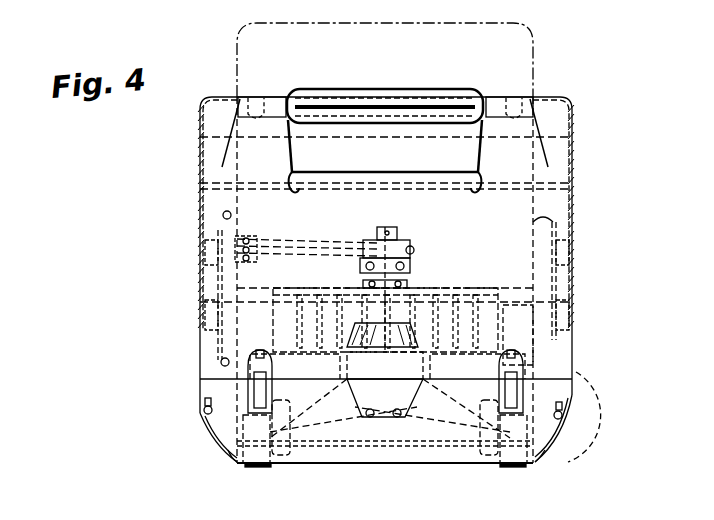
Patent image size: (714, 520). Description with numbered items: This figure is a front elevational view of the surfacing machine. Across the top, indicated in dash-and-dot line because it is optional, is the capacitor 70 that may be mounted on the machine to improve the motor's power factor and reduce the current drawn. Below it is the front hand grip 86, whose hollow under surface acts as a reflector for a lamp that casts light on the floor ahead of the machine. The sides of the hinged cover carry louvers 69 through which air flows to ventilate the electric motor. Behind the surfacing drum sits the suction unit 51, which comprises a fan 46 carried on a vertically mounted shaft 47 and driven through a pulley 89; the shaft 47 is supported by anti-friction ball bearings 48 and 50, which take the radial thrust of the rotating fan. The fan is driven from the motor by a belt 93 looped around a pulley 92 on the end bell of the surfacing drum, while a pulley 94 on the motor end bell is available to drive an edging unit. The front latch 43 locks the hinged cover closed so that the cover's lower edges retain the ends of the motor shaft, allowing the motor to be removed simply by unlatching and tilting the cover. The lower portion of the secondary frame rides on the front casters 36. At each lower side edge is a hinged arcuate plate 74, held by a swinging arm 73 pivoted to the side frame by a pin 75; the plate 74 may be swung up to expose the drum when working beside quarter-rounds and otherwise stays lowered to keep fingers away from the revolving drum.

The capacitor 70 is at (527, 78).
The louvers 69 is at (200, 240).
The front hand grip 86 is at (396, 164).
The belt 93 is at (222, 213).
The pulley 89 is at (402, 243).
The anti-friction ball bearing 50 is at (405, 268).
The pulley 94 is at (555, 238).
The pulley 92 is at (220, 357).
The fan 46 is at (300, 328).
The suction unit 51 is at (526, 334).
The vertically mounted shaft 47 is at (384, 372).
The anti-friction ball bearing 48 is at (394, 413).
The front latch 43 is at (273, 370).
The front casters 36 is at (260, 468).
The pin 75 is at (204, 410).
The swinging arm 73 is at (222, 430).
The arcuate plate 74 is at (230, 455).